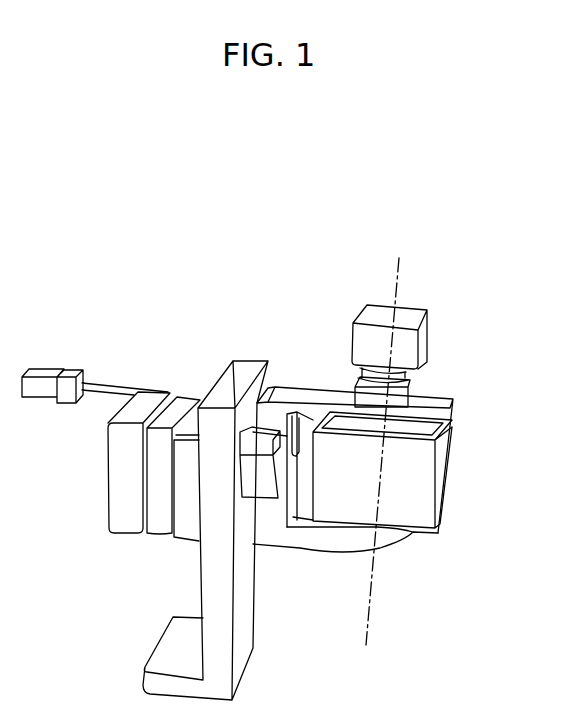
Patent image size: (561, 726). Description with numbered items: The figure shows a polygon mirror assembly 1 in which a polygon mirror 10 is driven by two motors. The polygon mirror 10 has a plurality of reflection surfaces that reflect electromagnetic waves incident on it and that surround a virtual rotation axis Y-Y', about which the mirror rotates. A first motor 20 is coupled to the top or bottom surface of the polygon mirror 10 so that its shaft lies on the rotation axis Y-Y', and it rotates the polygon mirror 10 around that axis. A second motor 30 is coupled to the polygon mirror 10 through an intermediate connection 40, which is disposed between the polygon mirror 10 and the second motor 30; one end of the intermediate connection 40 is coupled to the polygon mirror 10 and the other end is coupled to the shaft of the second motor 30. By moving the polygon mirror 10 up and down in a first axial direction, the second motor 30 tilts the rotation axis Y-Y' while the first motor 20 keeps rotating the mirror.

The polygon mirror assembly 1 is at (211, 240).
The polygon mirror 10 is at (428, 483).
The first motor 20 is at (413, 342).
The second motor 30 is at (120, 475).
The intermediate connection 40 is at (313, 542).